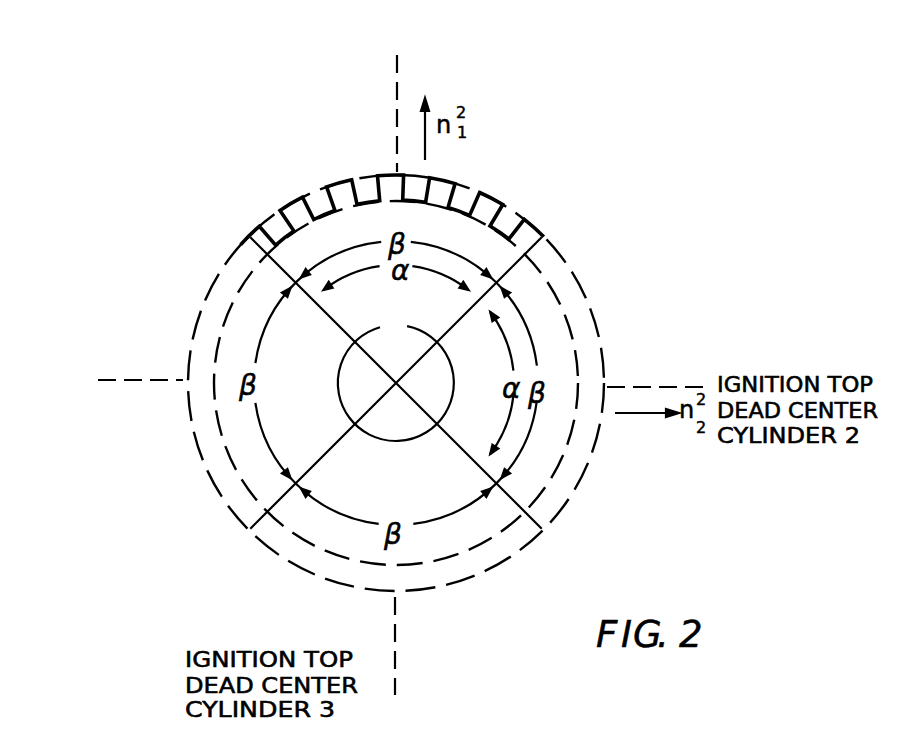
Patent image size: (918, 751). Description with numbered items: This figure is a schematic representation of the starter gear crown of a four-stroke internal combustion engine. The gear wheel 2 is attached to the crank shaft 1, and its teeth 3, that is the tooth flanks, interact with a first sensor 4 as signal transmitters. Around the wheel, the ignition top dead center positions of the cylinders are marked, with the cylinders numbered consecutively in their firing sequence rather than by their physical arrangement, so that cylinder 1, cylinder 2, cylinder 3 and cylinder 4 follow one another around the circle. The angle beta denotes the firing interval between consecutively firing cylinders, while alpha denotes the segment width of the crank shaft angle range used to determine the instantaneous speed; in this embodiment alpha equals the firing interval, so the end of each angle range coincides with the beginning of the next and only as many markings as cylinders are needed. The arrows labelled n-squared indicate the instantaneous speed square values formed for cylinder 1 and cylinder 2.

The crank shaft 1 is at (302, 113).
The gear wheel 2 is at (200, 304).
The teeth 3 is at (287, 203).
The first sensor 4 is at (107, 408).